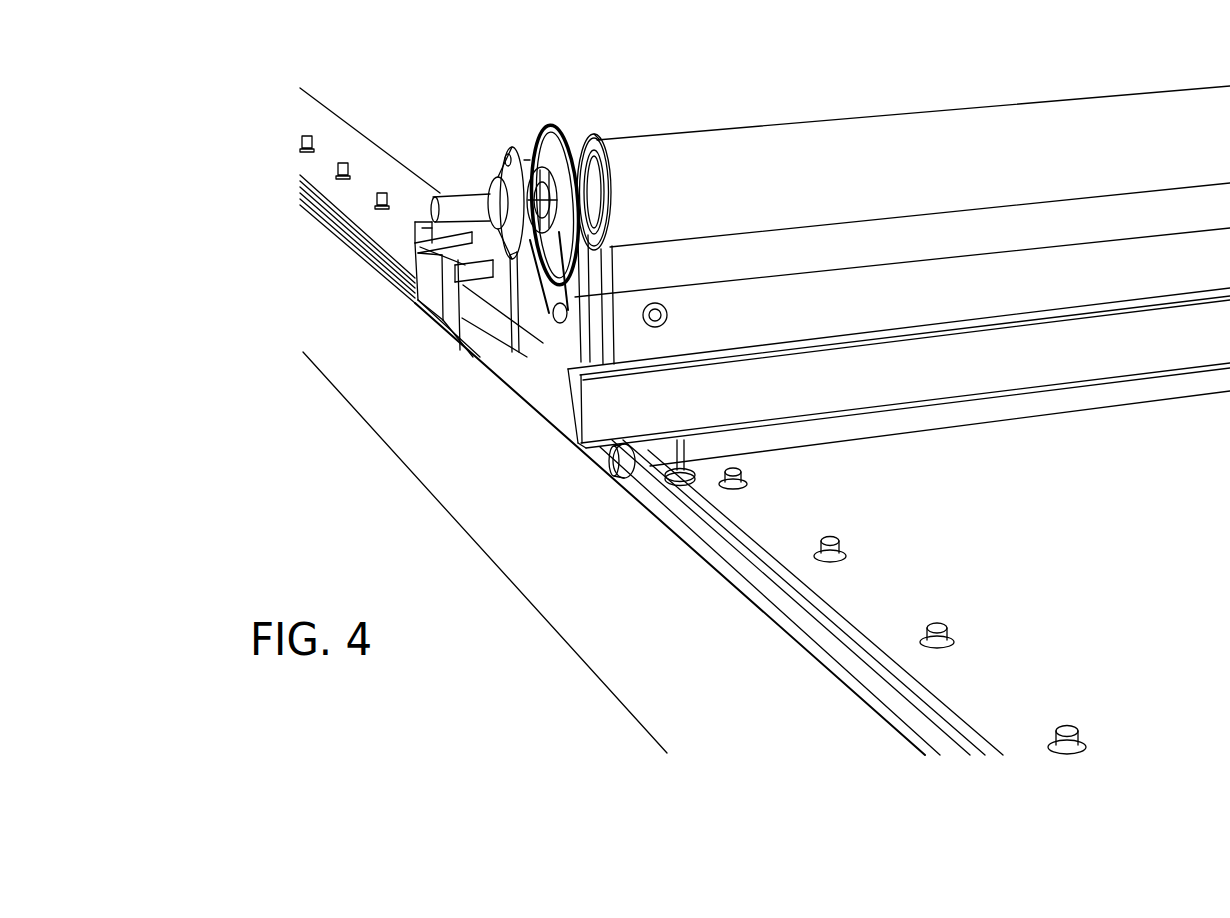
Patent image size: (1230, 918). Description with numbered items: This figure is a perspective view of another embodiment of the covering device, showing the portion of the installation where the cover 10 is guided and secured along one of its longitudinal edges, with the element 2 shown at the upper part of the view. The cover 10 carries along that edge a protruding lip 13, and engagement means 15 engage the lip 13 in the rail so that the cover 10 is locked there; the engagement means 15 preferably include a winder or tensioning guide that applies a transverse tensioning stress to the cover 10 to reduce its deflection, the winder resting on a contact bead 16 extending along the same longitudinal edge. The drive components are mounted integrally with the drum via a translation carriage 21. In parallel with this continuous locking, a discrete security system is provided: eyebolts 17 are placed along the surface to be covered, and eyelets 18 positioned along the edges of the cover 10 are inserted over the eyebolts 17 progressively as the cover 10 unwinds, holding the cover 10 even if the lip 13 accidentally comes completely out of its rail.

The roller 2 is at (813, 108).
The cover 10 is at (1120, 492).
The lip 13 is at (843, 647).
The engagement means 15 is at (622, 453).
The contact bead 16 is at (757, 543).
The eyebolts 17 is at (337, 148).
The eyelets 18 is at (667, 306).
The translation carriage 21 is at (523, 345).